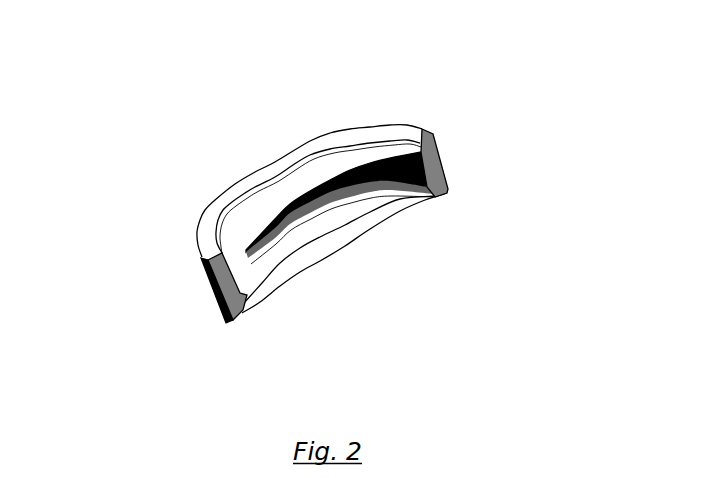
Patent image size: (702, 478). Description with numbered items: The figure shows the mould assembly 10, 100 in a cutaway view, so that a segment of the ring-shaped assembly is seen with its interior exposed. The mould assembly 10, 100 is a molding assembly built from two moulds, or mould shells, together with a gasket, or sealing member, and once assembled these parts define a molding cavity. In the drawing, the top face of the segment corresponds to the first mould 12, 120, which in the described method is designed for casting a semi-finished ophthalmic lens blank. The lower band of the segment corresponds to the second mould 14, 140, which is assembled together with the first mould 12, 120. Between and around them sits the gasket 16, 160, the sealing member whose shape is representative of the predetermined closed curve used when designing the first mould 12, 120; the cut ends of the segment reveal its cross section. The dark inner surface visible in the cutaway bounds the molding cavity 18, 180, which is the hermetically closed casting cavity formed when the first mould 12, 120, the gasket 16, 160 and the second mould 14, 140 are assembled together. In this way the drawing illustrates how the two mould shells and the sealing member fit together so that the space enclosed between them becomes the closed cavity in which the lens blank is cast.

The mould assembly 10 is at (282, 215).
The bearing segment 100 is at (282, 215).
The mould 12 is at (229, 196).
The first mould 120 is at (238, 203).
The mould 14 is at (261, 282).
The second mould 140 is at (260, 268).
The gasket 16 is at (253, 226).
The gasket 160 is at (220, 293).
The molding cavity 18 is at (386, 218).
The casting cavity 180 is at (340, 214).